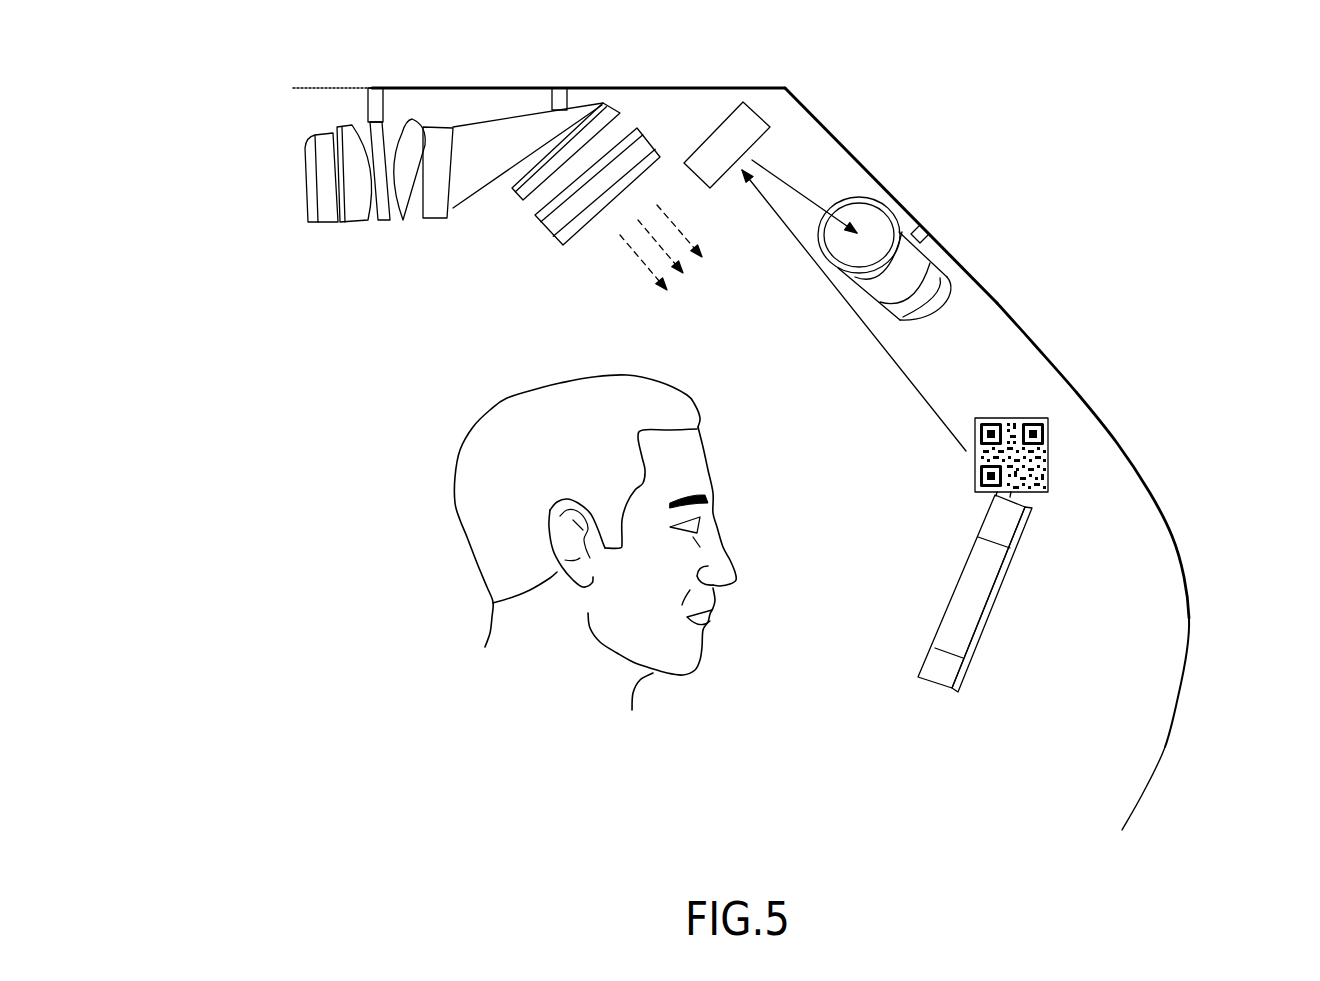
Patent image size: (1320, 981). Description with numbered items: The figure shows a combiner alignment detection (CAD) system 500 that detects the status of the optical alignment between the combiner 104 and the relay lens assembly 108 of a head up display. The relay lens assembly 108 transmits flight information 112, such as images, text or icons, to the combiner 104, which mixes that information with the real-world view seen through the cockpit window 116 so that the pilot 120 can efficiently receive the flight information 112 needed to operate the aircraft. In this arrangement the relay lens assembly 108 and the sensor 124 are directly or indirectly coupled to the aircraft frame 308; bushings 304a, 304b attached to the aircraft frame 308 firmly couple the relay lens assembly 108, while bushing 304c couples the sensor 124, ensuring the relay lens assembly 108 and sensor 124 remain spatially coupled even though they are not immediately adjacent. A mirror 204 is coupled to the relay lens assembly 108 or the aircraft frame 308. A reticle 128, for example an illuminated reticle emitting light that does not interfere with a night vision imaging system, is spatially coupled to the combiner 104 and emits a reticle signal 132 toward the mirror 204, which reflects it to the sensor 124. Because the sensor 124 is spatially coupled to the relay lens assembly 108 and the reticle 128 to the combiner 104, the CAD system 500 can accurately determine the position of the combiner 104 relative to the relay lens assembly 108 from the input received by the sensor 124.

The CAD system 500 is at (253, 53).
The combiner 104 is at (1017, 612).
The relay lens assembly 108 is at (355, 250).
The flight information 112 is at (625, 275).
The cockpit window 116 is at (1202, 551).
The pilot 120 is at (755, 490).
The sensor 124 is at (960, 316).
The reticle 128 is at (1058, 444).
The reticle signal 132 is at (805, 173).
The mirror 204 is at (762, 113).
The bushing 304a is at (367, 72).
The bushing 304b is at (556, 72).
The bushing 304c is at (930, 224).
The aircraft frame 308 is at (895, 176).